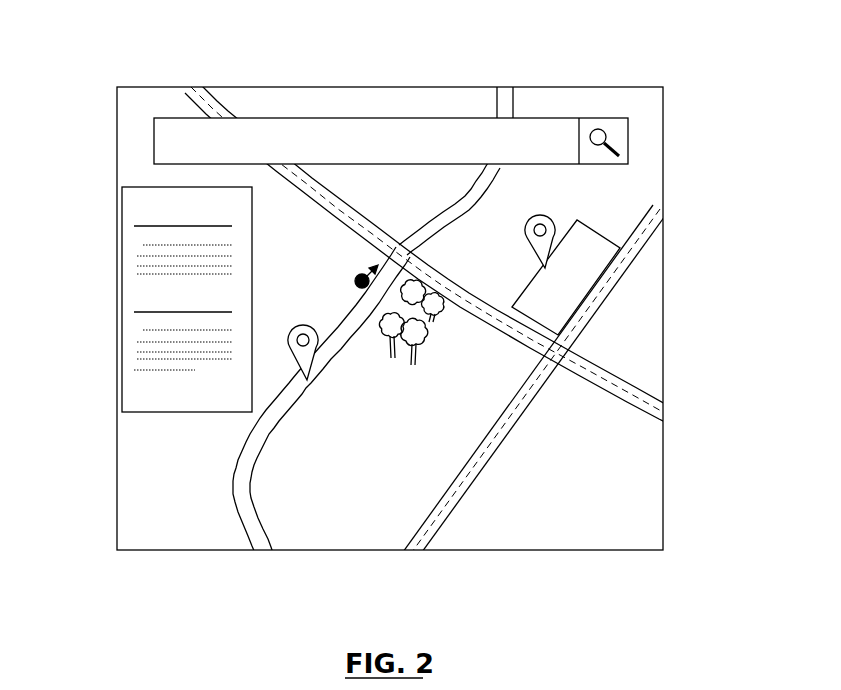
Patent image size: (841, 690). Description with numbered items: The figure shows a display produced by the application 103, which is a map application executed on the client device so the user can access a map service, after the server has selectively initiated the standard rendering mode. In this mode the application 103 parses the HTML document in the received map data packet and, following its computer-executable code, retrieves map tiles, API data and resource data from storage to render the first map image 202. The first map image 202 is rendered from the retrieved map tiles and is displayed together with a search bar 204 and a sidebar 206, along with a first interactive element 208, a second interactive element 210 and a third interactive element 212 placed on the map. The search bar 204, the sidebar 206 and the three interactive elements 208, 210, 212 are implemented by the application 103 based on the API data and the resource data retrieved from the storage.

The application 103 is at (640, 86).
The first map image 202 is at (538, 522).
The search bar 204 is at (374, 117).
The sidebar 206 is at (140, 187).
The first interactive element 208 is at (550, 214).
The second interactive element 210 is at (302, 325).
The third interactive element 212 is at (355, 283).